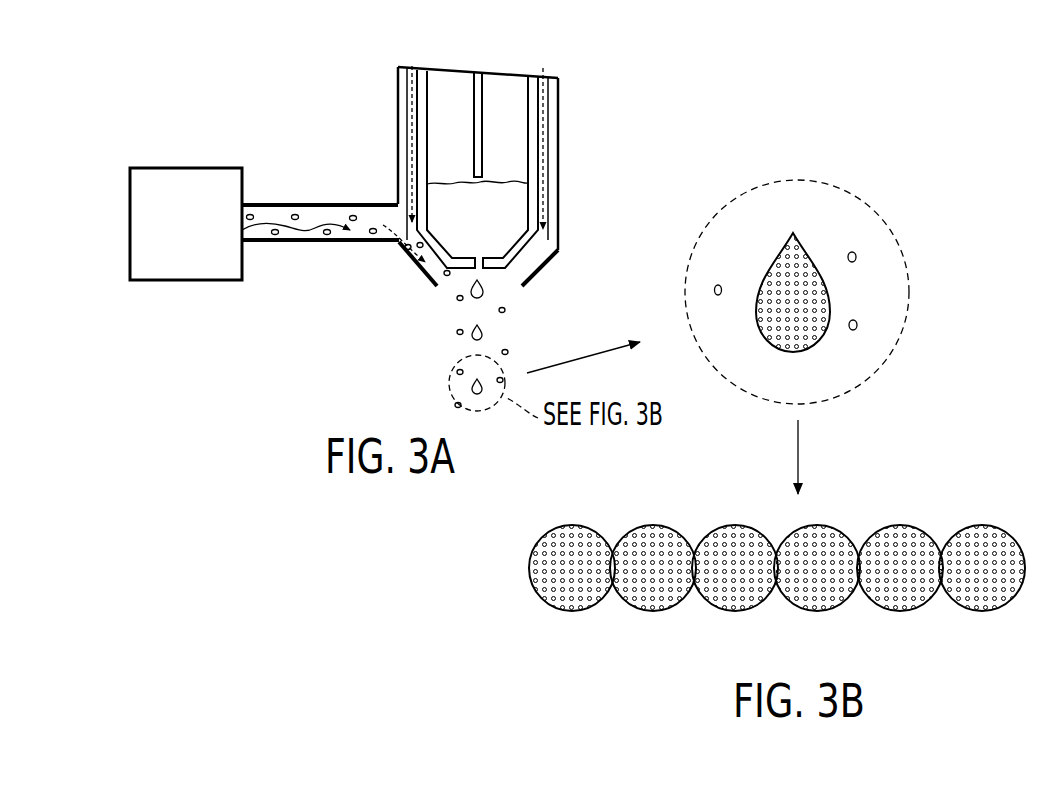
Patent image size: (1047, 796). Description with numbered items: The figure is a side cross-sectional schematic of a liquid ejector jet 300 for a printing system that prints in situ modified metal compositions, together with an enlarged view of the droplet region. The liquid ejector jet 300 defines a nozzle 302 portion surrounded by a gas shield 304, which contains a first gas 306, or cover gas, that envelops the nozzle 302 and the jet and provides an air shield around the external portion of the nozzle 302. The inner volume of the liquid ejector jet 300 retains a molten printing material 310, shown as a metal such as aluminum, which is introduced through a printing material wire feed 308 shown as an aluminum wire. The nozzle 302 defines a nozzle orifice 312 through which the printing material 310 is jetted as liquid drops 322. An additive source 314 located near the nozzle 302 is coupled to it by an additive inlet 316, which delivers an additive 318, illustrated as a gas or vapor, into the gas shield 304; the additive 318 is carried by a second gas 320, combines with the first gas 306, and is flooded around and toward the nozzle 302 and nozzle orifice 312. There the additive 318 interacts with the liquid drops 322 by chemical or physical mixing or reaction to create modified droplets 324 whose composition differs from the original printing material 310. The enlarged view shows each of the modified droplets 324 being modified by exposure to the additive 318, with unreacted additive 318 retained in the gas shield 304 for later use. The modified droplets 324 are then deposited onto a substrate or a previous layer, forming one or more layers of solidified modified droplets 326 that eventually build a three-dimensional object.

In FIG. 3A, the liquid ejector jet 300 is at (343, 102).
In FIG. 3A, the nozzle 302 is at (533, 202).
In FIG. 3A, the gas shield 304 is at (558, 155).
In FIG. 3A, the first gas 306 is at (545, 112).
In FIG. 3A, the printing material wire feed 308 is at (483, 80).
In FIG. 3A, the printing material 310 is at (498, 247).
In FIG. 3A, the nozzle orifice 312 is at (492, 278).
In FIG. 3A, the additive source 314 is at (187, 270).
In FIG. 3A, the additive inlet 316 is at (357, 243).
In FIG. 3A, the additive 318 is at (277, 240).
In FIG. 3B, the additive 318 is at (856, 258).
In FIG. 3A, the second gas 320 is at (320, 228).
In FIG. 3A, the liquid drops 322 is at (483, 335).
In FIG. 3B, the modified droplets 324 is at (805, 265).
In FIG. 3B, the solidified modified droplets 326 is at (538, 575).